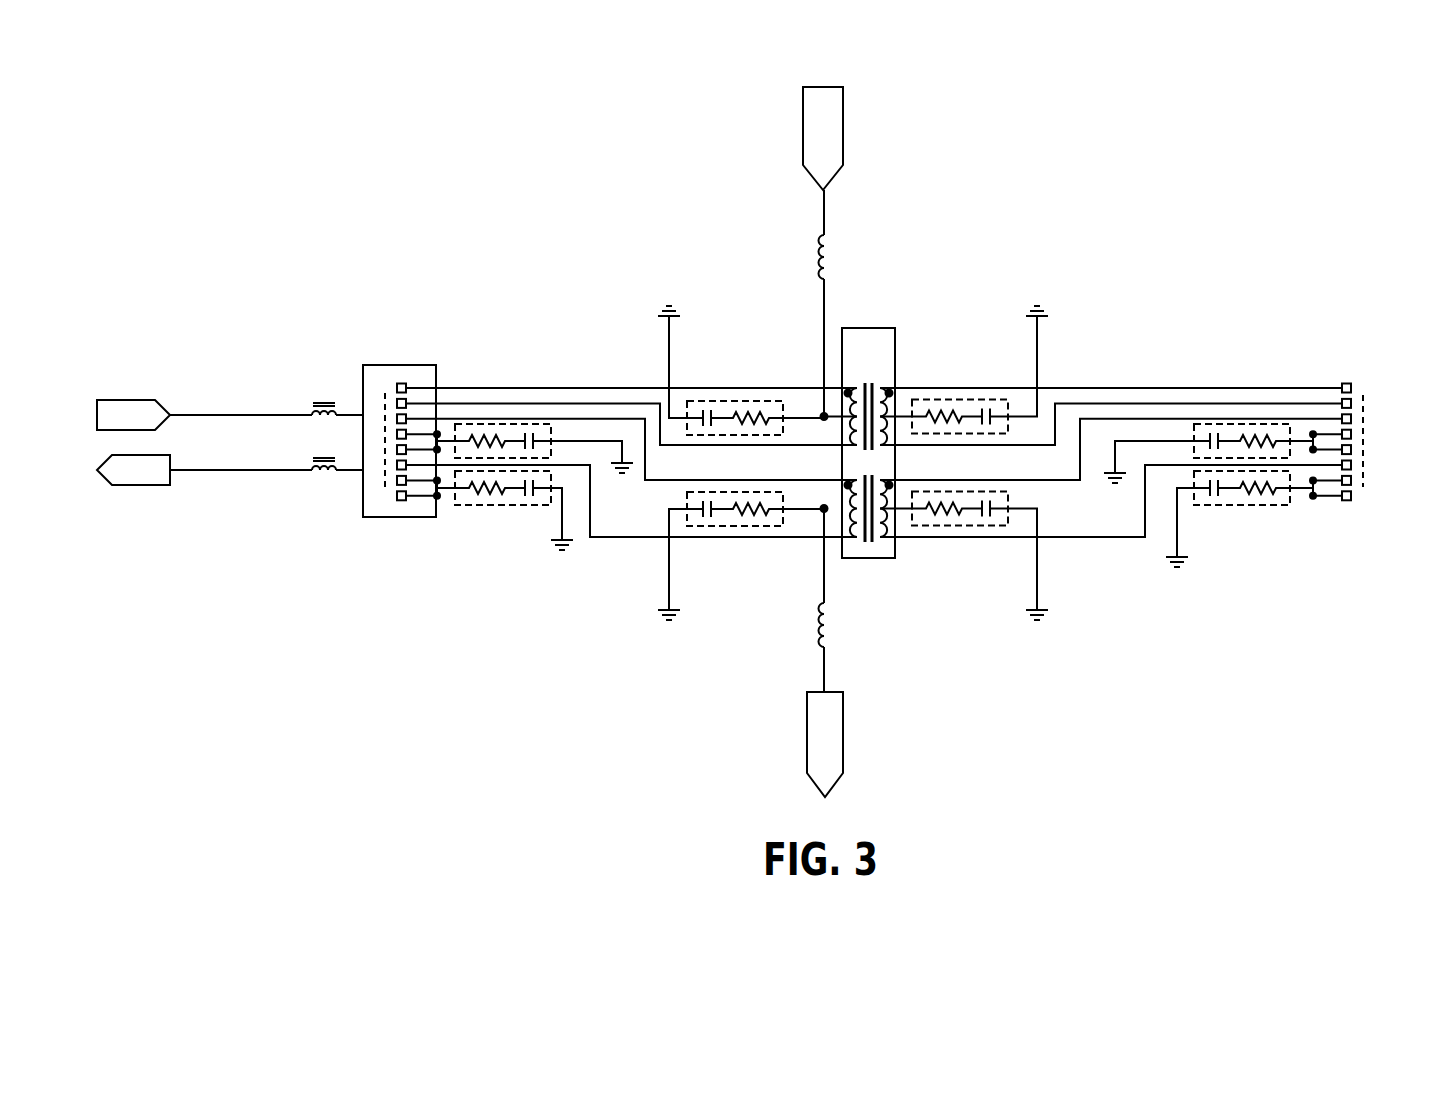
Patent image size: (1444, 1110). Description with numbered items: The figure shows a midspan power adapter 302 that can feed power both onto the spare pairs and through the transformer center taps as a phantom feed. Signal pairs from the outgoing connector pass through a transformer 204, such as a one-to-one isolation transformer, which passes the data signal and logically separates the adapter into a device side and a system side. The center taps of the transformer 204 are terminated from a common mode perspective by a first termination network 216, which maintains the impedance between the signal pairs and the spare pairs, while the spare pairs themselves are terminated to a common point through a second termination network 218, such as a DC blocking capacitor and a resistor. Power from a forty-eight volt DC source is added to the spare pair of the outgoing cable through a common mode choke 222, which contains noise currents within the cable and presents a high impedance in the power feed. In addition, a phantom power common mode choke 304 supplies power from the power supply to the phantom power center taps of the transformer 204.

The midspan power adapter 302 is at (1015, 157).
The phantom power common mode choke 304 is at (822, 322).
The transformer 204 is at (867, 327).
The first termination network 216 is at (755, 402).
The second termination network 218 is at (499, 424).
The common mode choke 222 is at (352, 412).